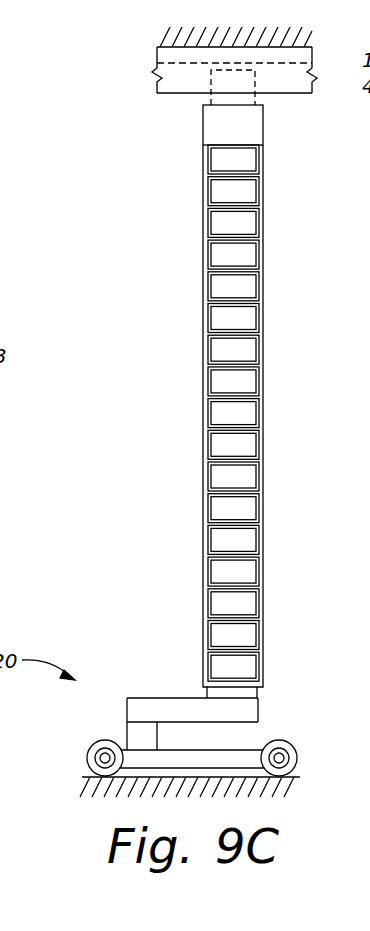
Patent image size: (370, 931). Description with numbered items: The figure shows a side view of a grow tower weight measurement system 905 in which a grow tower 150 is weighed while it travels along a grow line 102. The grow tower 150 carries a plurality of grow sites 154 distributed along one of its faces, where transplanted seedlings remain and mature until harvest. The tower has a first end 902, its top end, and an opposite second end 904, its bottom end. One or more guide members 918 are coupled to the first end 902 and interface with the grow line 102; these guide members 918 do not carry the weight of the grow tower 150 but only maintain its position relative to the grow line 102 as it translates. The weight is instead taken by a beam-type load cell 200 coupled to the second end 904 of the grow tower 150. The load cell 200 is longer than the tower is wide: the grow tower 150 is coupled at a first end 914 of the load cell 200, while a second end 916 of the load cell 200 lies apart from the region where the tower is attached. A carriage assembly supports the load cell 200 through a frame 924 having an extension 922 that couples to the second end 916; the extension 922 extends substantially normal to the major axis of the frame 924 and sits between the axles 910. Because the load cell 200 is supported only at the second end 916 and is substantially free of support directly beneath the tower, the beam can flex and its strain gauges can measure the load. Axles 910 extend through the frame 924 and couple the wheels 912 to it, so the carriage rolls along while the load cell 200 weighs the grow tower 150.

The grow line 102 is at (165, 84).
The guide member 918 is at (245, 100).
The first end 902 is at (180, 127).
The grow tower 150 is at (198, 259).
The grow sites 154 is at (223, 384).
The grow tower weight measurement system 905 is at (231, 396).
The second end 904 is at (181, 667).
The load cell 200 is at (177, 700).
The second end of the load cell 916 is at (127, 708).
The first end of the load cell 914 is at (258, 704).
The extension 922 is at (138, 738).
The frame 924 is at (178, 760).
The wheels 912 is at (90, 758).
The axles 910 is at (287, 758).